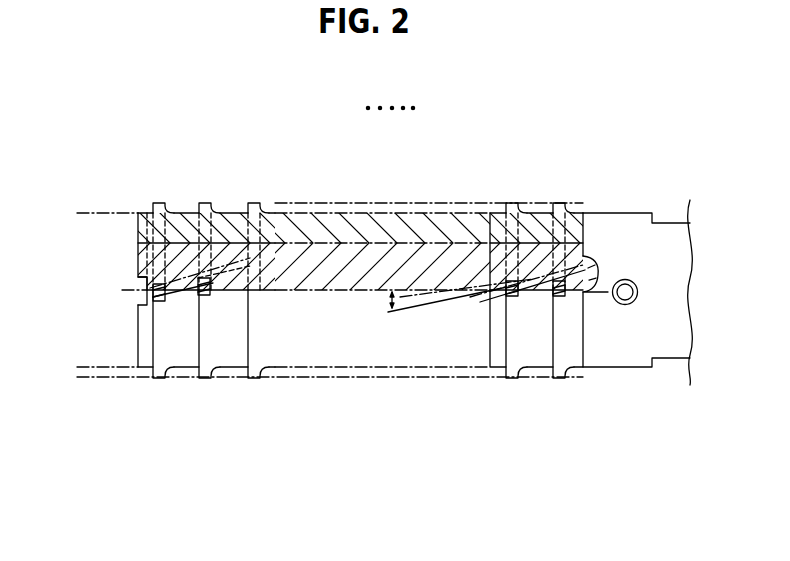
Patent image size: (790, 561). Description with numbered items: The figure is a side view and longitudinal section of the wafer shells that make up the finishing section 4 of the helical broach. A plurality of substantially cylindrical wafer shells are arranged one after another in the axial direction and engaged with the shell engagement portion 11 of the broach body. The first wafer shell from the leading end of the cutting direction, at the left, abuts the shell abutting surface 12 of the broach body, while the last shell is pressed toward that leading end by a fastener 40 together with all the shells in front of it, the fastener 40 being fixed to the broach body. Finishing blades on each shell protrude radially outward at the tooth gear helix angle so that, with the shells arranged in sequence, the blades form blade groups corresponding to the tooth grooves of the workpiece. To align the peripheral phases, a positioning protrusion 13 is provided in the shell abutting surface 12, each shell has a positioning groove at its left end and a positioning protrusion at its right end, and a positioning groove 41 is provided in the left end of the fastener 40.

The finishing section 4 is at (402, 423).
The shell engagement portion 11 is at (385, 262).
The shell abutting surface 12 is at (138, 305).
The positioning protrusion 13 is at (147, 292).
The fastener 40 is at (633, 237).
The positioning groove 41 is at (587, 265).